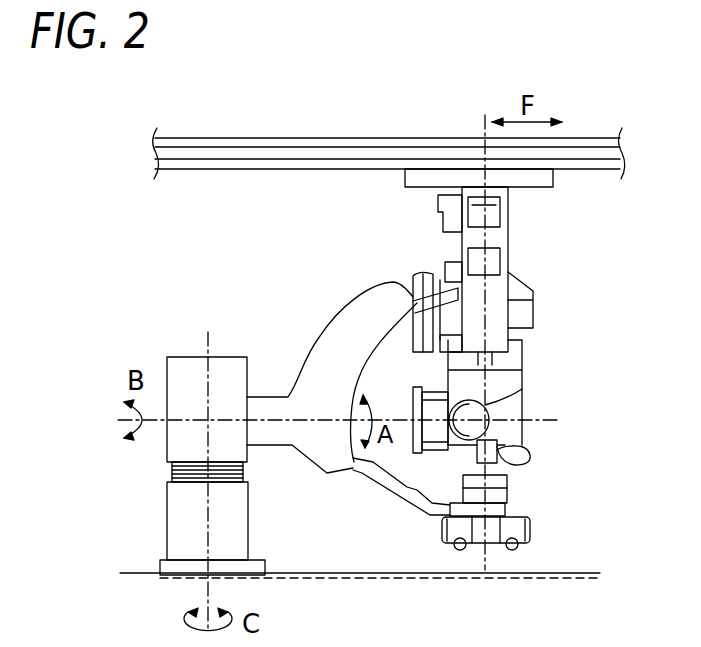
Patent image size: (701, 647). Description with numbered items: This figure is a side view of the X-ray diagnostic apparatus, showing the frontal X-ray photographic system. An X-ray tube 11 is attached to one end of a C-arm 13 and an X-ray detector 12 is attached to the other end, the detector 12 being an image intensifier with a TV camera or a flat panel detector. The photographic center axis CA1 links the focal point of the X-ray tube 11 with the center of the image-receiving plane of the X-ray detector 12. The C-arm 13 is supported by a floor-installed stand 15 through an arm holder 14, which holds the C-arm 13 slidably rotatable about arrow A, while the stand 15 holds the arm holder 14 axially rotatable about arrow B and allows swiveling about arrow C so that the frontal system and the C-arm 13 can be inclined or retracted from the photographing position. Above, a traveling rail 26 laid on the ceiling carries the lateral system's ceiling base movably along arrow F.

The traveling rail 26 is at (321, 153).
The X-ray detector 12 is at (534, 312).
The C-arm 13 is at (421, 275).
The photographic center axis CA1 is at (525, 392).
The X-ray tube 11 is at (443, 523).
The arm holder 14 is at (338, 325).
The stand 15 is at (180, 357).